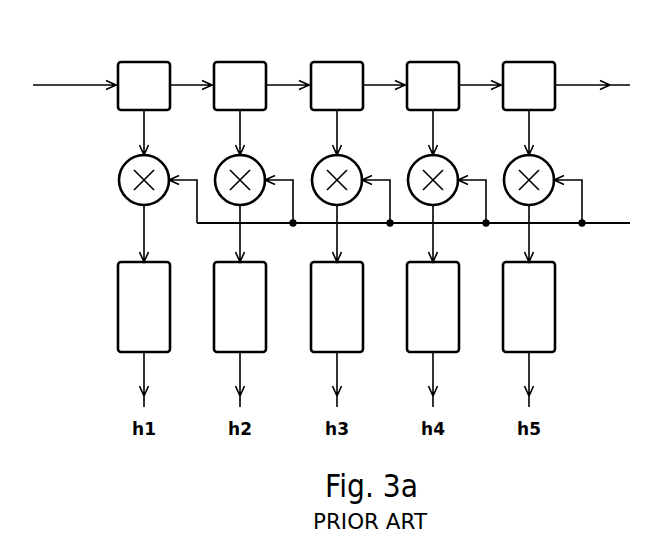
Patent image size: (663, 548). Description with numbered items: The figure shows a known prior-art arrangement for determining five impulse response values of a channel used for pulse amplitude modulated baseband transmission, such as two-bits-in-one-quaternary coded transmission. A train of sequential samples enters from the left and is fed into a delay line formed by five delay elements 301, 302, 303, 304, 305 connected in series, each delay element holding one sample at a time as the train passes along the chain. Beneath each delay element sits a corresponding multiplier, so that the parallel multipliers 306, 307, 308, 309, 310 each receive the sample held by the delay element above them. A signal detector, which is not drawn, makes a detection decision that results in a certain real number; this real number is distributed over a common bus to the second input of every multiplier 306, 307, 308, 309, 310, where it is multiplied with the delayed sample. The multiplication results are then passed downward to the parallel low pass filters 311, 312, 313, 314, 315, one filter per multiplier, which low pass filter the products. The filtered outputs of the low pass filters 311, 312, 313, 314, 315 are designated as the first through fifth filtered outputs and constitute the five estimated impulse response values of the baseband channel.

The delay element 301 is at (131, 61).
The delay element 302 is at (227, 61).
The delay element 303 is at (324, 61).
The delay element 304 is at (420, 61).
The delay element 305 is at (516, 61).
The multiplier 306 is at (128, 161).
The multiplier 307 is at (224, 161).
The multiplier 308 is at (321, 161).
The multiplier 309 is at (417, 161).
The multiplier 310 is at (513, 161).
The low pass filter 311 is at (132, 354).
The low pass filter 312 is at (228, 354).
The low pass filter 313 is at (325, 354).
The low pass filter 314 is at (421, 354).
The low pass filter 315 is at (517, 354).